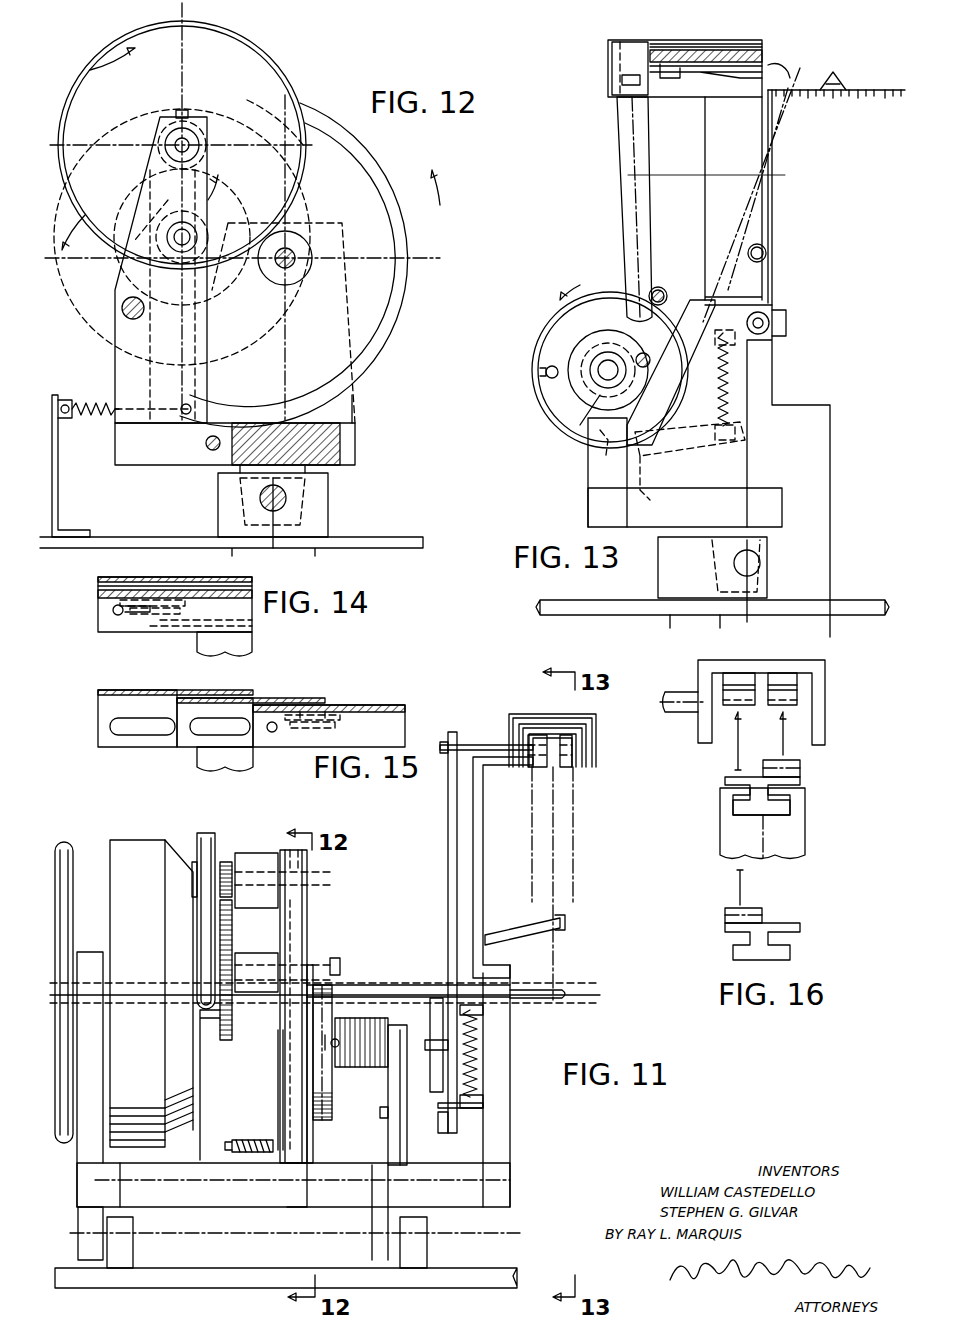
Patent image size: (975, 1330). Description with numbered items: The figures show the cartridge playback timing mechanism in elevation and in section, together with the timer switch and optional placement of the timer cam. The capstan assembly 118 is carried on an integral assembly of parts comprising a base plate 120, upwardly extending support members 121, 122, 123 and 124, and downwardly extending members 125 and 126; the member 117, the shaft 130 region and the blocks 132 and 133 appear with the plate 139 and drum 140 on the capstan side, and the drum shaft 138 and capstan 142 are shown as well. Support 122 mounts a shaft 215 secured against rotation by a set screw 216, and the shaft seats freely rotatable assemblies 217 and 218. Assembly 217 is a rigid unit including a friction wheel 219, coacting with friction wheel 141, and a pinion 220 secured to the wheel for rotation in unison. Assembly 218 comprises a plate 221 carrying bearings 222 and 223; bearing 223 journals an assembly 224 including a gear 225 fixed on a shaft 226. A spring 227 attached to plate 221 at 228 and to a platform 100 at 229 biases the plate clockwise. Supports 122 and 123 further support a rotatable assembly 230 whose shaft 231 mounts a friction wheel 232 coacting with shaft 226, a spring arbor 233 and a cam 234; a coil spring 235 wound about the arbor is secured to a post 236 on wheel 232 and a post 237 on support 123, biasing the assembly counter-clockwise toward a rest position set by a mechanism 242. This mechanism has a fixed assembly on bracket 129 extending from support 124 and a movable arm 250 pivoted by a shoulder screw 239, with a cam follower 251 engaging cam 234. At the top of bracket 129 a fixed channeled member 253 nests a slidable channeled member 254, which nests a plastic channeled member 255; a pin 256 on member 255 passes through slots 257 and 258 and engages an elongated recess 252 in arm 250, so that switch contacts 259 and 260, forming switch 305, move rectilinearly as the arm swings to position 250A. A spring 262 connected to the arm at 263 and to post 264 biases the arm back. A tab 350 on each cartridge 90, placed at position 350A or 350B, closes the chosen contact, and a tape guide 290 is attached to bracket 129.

In FIG. 13, the cartridge 90 is at (880, 163).
In FIG. 16, the cartridge 90 is at (800, 838).
In FIG. 11, the cartridge 90 is at (578, 875).
In FIG. 13, the platform 100 is at (598, 612).
In FIG. 11, the platform 100 is at (140, 1282).
In FIG. 12, the cross member 117 is at (210, 452).
In FIG. 11, the cross member 117 is at (130, 1183).
In FIG. 11, the capstan assembly 118 is at (90, 825).
In FIG. 12, the base plate 120 is at (355, 443).
In FIG. 13, the base plate 120 is at (750, 492).
In FIG. 11, the base plate 120 is at (205, 1205).
In FIG. 12, the support member 121 is at (355, 410).
In FIG. 11, the support member 121 is at (88, 1057).
In FIG. 12, the support member 122 is at (207, 390).
In FIG. 11, the support member 122 is at (300, 1190).
In FIG. 13, the support member 123 is at (598, 478).
In FIG. 11, the support member 123 is at (405, 1160).
In FIG. 13, the support member 124 is at (760, 512).
In FIG. 11, the support member 124 is at (496, 1180).
In FIG. 12, the downwardly extending member 125 is at (320, 500).
In FIG. 11, the downwardly extending member 125 is at (85, 1220).
In FIG. 13, the downwardly extending member 126 is at (770, 548).
In FIG. 11, the downwardly extending member 126 is at (375, 1246).
In FIG. 13, the bracket 129 is at (712, 190).
In FIG. 14, the bracket 129 is at (242, 646).
In FIG. 15, the bracket 129 is at (243, 755).
In FIG. 11, the bracket 129 is at (480, 886).
In FIG. 12, the shaft 130 is at (260, 495).
In FIG. 13, the shaft 130 is at (762, 568).
In FIG. 11, the shaft 130 is at (233, 1237).
In FIG. 12, the block 132 is at (330, 517).
In FIG. 11, the block 132 is at (134, 1254).
In FIG. 13, the block 133 is at (668, 575).
In FIG. 11, the block 133 is at (420, 1256).
In FIG. 12, the drum shaft 138 is at (295, 248).
In FIG. 11, the drum shaft 138 is at (338, 993).
In FIG. 11, the side plate 139 is at (55, 860).
In FIG. 12, the drum 140 is at (380, 150).
In FIG. 11, the drum 140 is at (138, 848).
In FIG. 12, the friction wheel 141 is at (302, 285).
In FIG. 11, the friction wheel 141 is at (205, 1030).
In FIG. 13, the capstan 142 is at (790, 323).
In FIG. 11, the capstan 142 is at (562, 990).
In FIG. 12, the shaft 215 is at (175, 142).
In FIG. 11, the shaft 215 is at (192, 870).
In FIG. 12, the set screw 216 is at (190, 112).
In FIG. 11, the set screw 216 is at (310, 858).
In FIG. 11, the rotatable assembly 217 is at (249, 827).
In FIG. 12, the rotatable assembly 218 is at (296, 61).
In FIG. 11, the rotatable assembly 218 is at (292, 820).
In FIG. 12, the friction wheel 219 is at (222, 40).
In FIG. 11, the friction wheel 219 is at (200, 905).
In FIG. 12, the pinion 220 is at (233, 140).
In FIG. 11, the pinion 220 is at (230, 862).
In FIG. 12, the plate 221 is at (134, 196).
In FIG. 11, the plate 221 is at (312, 920).
In FIG. 12, the bearing 222 is at (148, 170).
In FIG. 11, the bearing 222 is at (258, 897).
In FIG. 12, the bearing 223 is at (238, 214).
In FIG. 11, the bearing 223 is at (256, 995).
In FIG. 12, the assembly 224 is at (259, 335).
In FIG. 11, the assembly 224 is at (243, 1044).
In FIG. 12, the gear 225 is at (212, 292).
In FIG. 11, the gear 225 is at (218, 938).
In FIG. 12, the shaft 226 is at (196, 210).
In FIG. 13, the shaft 226 is at (665, 290).
In FIG. 11, the shaft 226 is at (340, 960).
In FIG. 12, the spring 227 is at (70, 400).
In FIG. 11, the spring 227 is at (260, 1140).
In FIG. 12, the attachment point 228 is at (190, 425).
In FIG. 11, the attachment point 228 is at (272, 1140).
In FIG. 12, the attachment point 229 is at (70, 420).
In FIG. 11, the attachment point 229 is at (228, 1150).
In FIG. 13, the rotatable assembly 230 is at (544, 439).
In FIG. 11, the rotatable assembly 230 is at (386, 1018).
In FIG. 13, the shaft 231 is at (570, 340).
In FIG. 11, the shaft 231 is at (280, 1075).
In FIG. 13, the friction wheel 232 is at (600, 295).
In FIG. 11, the friction wheel 232 is at (336, 1104).
In FIG. 11, the spring arbor 233 is at (384, 1036).
In FIG. 13, the cam 234 is at (560, 388).
In FIG. 11, the cam 234 is at (446, 1103).
In FIG. 13, the coil spring 235 is at (572, 410).
In FIG. 11, the coil spring 235 is at (386, 1072).
In FIG. 13, the post 236 is at (546, 370).
In FIG. 11, the post 236 is at (330, 1052).
In FIG. 13, the post 237 is at (600, 445).
In FIG. 11, the post 237 is at (385, 1122).
In FIG. 13, the shoulder screw 239 is at (645, 496).
In FIG. 11, the shoulder screw 239 is at (440, 1135).
In FIG. 13, the mechanism 242 is at (813, 264).
In FIG. 11, the mechanism 242 is at (435, 776).
In FIG. 13, the arm 250 is at (622, 210).
In FIG. 11, the arm 250 is at (450, 858).
In FIG. 13, the dotted line position of arm 250A is at (762, 200).
In FIG. 13, the cam follower 251 is at (775, 65).
In FIG. 11, the cam follower 251 is at (447, 1045).
In FIG. 13, the elongated recess 252 is at (618, 66).
In FIG. 11, the elongated recess 252 is at (440, 745).
In FIG. 14, the fixed channeled member 253 is at (98, 578).
In FIG. 15, the fixed channeled member 253 is at (112, 691).
In FIG. 11, the fixed channeled member 253 is at (596, 716).
In FIG. 14, the slidable channeled member 254 is at (98, 588).
In FIG. 15, the slidable channeled member 254 is at (168, 700).
In FIG. 11, the slidable channeled member 254 is at (592, 735).
In FIG. 14, the electrically non-conductive channeled member 255 is at (98, 600).
In FIG. 15, the electrically non-conductive channeled member 255 is at (240, 705).
In FIG. 16, the electrically non-conductive channeled member 255 is at (826, 728).
In FIG. 11, the electrically non-conductive channeled member 255 is at (585, 755).
In FIG. 13, the pin 256 is at (620, 100).
In FIG. 14, the pin 256 is at (114, 616).
In FIG. 15, the pin 256 is at (278, 733).
In FIG. 11, the pin 256 is at (480, 746).
In FIG. 15, the slot 257 is at (140, 730).
In FIG. 15, the slot 258 is at (190, 732).
In FIG. 16, the switch contact 259 is at (790, 700).
In FIG. 16, the switch contact 260 is at (730, 685).
In FIG. 13, the spring 262 is at (740, 380).
In FIG. 11, the spring 262 is at (478, 1056).
In FIG. 13, the attachment point 263 is at (745, 436).
In FIG. 11, the attachment point 263 is at (483, 1104).
In FIG. 13, the post 264 is at (760, 350).
In FIG. 11, the tape guide 290 is at (500, 938).
In FIG. 13, the switch 305 is at (630, 31).
In FIG. 14, the switch 305 is at (168, 625).
In FIG. 15, the switch 305 is at (353, 732).
In FIG. 16, the switch 305 is at (715, 764).
In FIG. 13, the tab 350 is at (838, 70).
In FIG. 16, the tab 350 is at (790, 782).
In FIG. 11, the tab 350 is at (558, 766).
In FIG. 16, the tab position 350A is at (832, 797).
In FIG. 16, the tab position 350B is at (815, 920).